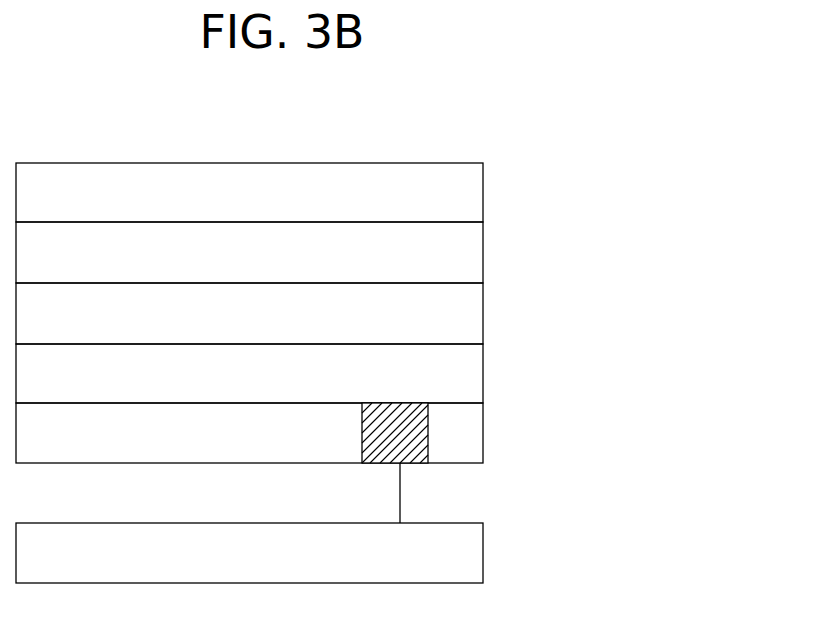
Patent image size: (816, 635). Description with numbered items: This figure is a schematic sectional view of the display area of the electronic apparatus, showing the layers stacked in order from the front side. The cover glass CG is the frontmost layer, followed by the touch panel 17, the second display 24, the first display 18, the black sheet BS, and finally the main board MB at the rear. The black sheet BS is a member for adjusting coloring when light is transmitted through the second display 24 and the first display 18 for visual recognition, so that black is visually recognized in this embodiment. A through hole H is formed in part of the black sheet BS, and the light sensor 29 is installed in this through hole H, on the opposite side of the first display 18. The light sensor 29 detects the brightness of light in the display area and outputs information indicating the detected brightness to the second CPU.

The cover glass CG is at (483, 192).
The touch panel 17 is at (483, 256).
The second display 24 is at (483, 312).
The first display 18 is at (483, 377).
The black sheet BS is at (483, 442).
The light sensor 29 is at (428, 414).
The through hole H is at (432, 478).
The main board MB is at (483, 551).